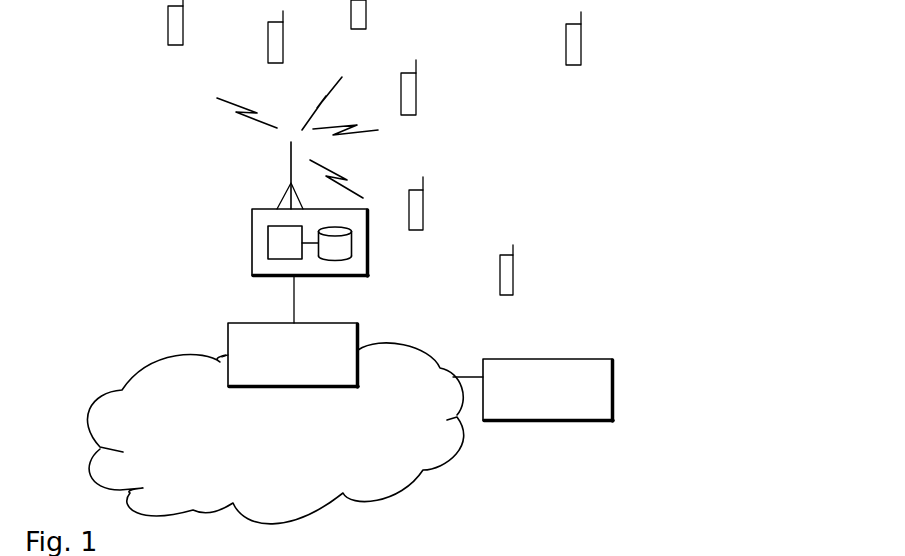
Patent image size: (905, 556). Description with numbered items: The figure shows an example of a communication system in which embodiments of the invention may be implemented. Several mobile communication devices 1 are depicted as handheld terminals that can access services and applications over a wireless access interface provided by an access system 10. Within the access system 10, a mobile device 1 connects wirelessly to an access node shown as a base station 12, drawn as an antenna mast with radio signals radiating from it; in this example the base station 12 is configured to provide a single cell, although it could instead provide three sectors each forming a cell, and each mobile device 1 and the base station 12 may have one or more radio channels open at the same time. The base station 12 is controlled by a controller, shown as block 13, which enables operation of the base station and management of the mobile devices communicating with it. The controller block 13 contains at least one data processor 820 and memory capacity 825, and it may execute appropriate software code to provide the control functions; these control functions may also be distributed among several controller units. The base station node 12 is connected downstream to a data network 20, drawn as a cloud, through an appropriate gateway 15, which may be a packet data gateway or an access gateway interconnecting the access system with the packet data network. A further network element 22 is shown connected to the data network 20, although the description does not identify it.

The mobile communication device 1 is at (416, 208).
The access system 10 is at (144, 156).
The base station 12 is at (287, 178).
The controller 13 is at (252, 227).
The data processor 820 is at (268, 243).
The memory capacity 825 is at (337, 243).
The gateway 15 is at (228, 340).
The data network 20 is at (143, 388).
The server 22 is at (568, 377).